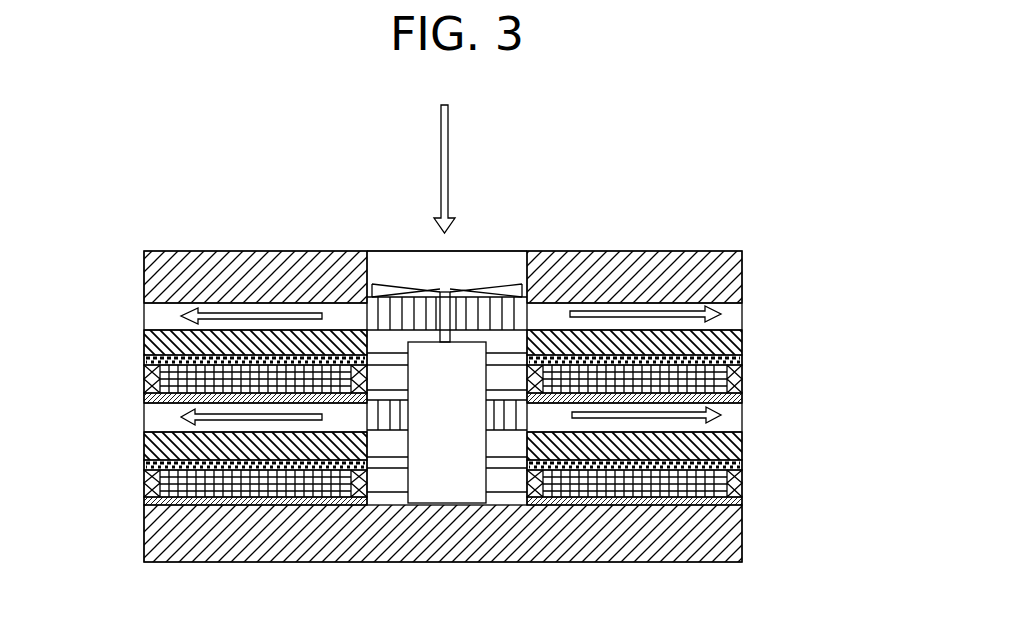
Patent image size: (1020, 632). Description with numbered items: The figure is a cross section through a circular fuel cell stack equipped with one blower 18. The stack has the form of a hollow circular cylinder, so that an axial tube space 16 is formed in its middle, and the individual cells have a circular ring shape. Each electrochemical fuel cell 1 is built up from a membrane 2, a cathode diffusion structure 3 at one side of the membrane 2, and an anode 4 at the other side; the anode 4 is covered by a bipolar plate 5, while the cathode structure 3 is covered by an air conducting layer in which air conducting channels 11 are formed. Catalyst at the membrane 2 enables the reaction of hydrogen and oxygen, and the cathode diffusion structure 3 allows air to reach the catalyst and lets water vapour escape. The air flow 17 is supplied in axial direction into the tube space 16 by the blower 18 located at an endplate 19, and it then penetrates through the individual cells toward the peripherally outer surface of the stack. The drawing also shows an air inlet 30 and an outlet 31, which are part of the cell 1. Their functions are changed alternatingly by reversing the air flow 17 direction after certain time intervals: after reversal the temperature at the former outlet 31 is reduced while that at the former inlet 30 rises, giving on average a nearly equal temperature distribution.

The electrochemical fuel cell 1 is at (758, 297).
The membrane 2 is at (145, 360).
The cathode diffusion structure 3 is at (145, 350).
The anode 4 is at (145, 382).
The bipolar plate 5 is at (145, 400).
The air conducting channels 11 is at (368, 291).
The axial tube space 16 is at (483, 268).
The air flow 17 is at (275, 316).
The blower 18 is at (410, 290).
The endplate 19 is at (640, 262).
The air inlet 30 is at (373, 251).
The outlet 31 is at (145, 425).